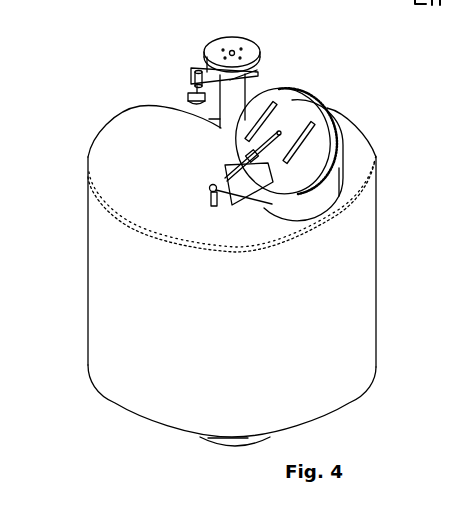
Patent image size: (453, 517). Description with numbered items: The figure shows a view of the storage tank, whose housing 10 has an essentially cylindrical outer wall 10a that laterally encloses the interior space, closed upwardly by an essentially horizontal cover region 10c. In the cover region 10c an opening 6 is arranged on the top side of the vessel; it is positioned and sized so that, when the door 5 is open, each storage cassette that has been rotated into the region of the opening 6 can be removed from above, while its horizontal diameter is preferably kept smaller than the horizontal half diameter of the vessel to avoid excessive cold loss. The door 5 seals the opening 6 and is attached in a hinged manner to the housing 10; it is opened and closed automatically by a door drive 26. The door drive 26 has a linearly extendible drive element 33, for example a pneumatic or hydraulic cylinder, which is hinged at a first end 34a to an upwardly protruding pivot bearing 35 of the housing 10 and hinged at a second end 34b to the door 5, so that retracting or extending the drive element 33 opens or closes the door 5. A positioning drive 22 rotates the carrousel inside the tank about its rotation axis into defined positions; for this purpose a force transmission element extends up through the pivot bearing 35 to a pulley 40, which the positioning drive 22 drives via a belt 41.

The housing 10 is at (256, 289).
The outer wall 10a is at (102, 233).
The cover region 10c is at (153, 123).
The door 5 is at (298, 93).
The opening 6 is at (340, 165).
The positioning drive 22 is at (191, 82).
The door drive 26 is at (224, 163).
The drive element 33 is at (210, 186).
The first end 34a is at (244, 197).
The second end 34b is at (279, 132).
The pivot bearing 35 is at (190, 208).
The pulley 40 is at (248, 34).
The belt 41 is at (178, 45).